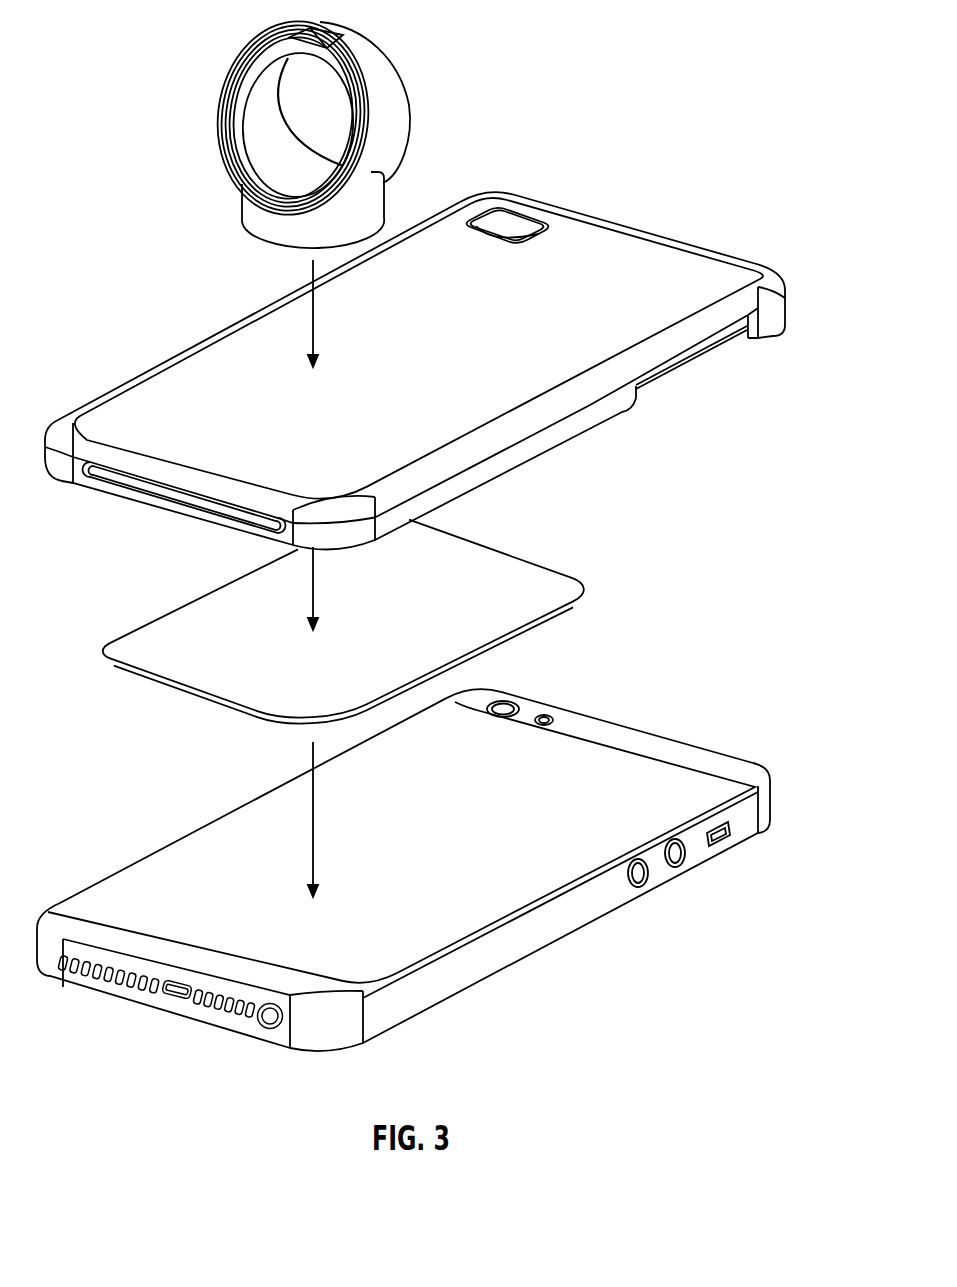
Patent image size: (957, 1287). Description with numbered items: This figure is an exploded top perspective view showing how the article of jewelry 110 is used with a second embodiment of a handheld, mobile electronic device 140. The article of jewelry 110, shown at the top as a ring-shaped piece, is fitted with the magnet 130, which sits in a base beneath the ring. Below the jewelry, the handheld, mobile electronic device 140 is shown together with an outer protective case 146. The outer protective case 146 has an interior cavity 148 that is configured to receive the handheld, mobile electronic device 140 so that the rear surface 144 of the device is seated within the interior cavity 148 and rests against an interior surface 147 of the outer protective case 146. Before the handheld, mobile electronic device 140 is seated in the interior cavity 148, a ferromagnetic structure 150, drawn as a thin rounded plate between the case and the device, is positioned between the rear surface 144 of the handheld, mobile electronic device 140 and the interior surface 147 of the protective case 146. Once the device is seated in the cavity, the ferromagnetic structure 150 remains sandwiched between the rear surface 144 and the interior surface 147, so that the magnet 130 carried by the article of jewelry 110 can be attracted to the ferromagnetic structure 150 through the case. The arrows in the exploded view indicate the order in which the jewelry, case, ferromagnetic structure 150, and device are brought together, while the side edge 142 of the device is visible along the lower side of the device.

The article of jewelry 110 is at (385, 136).
The magnet 130 is at (257, 240).
The handheld, mobile electronic device 140 is at (403, 868).
The side edge of mobile device 142 is at (487, 977).
The rear surface 144 is at (253, 833).
The outer protective case 146 is at (415, 354).
The interior surface 147 is at (604, 262).
The interior cavity 148 is at (668, 362).
The ferromagnetic structure 150 is at (523, 587).